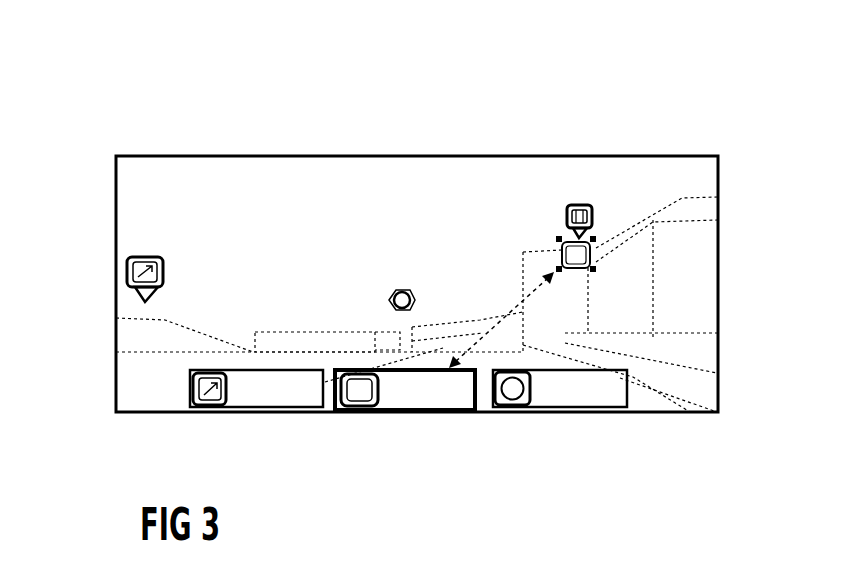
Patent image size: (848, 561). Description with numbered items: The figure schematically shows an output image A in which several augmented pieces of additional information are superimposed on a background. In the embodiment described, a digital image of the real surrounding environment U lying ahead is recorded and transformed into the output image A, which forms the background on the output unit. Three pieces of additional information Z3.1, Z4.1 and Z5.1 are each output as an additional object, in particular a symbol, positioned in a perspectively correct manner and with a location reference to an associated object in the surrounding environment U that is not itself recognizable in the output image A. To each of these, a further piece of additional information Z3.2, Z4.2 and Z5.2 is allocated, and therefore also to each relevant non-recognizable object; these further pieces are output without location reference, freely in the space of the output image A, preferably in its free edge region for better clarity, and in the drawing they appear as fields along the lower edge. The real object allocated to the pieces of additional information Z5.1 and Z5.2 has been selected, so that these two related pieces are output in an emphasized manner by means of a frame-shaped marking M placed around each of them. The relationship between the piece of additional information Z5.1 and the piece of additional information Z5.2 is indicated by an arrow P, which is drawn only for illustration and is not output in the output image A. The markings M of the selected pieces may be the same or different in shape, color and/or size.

The output image A is at (371, 148).
The real surrounding environment U is at (273, 175).
The piece of additional information Z3.1 is at (126, 280).
The piece of additional information Z3.2 is at (252, 393).
The piece of additional information Z4.1 is at (400, 292).
The piece of additional information Z4.2 is at (585, 393).
The piece of additional information Z5.1 is at (568, 207).
The piece of additional information Z5.2 is at (433, 393).
The frame-shaped marking M is at (380, 410).
The arrow P is at (503, 330).